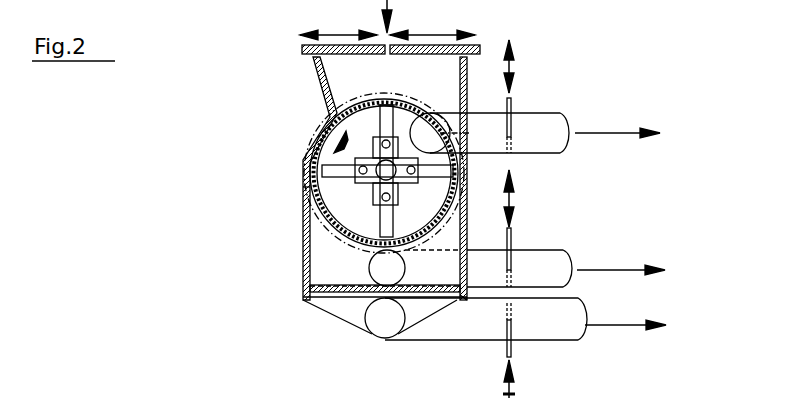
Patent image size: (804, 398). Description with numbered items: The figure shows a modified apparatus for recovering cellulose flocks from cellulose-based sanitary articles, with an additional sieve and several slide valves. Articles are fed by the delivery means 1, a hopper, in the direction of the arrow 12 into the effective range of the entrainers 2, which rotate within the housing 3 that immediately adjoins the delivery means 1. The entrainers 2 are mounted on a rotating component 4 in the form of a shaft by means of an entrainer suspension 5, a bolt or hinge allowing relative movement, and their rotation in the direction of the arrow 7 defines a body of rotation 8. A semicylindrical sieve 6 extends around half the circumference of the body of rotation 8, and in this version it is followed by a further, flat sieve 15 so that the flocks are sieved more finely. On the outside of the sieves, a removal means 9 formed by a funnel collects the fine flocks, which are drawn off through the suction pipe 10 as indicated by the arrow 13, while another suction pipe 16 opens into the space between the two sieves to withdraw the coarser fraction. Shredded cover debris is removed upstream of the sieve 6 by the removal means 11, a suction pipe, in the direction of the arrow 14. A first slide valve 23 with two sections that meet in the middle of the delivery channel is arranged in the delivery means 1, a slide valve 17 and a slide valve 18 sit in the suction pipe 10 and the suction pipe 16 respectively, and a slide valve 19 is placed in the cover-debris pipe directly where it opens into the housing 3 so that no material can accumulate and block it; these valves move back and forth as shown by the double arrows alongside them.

The delivery means 1 is at (343, 80).
The entrainers 2 is at (455, 187).
The housing 3 is at (303, 187).
The rotating component 4 is at (440, 172).
The entrainer suspension 5 is at (389, 140).
The sieve 6 is at (360, 250).
The arrow 7 is at (338, 150).
The body of rotation 8 is at (358, 104).
The removal means 9 is at (353, 309).
The pipe 10 is at (550, 332).
The removal means 11 is at (550, 125).
The arrow 12 is at (397, 0).
The arrow 13 is at (623, 272).
The arrow 14 is at (636, 140).
The sieve 15 is at (352, 268).
The suction pipe 16 is at (548, 260).
The slide valve 17 is at (515, 343).
The slide valve 18 is at (512, 233).
The slide valve 19 is at (513, 108).
The first slide valve 23 is at (302, 45).